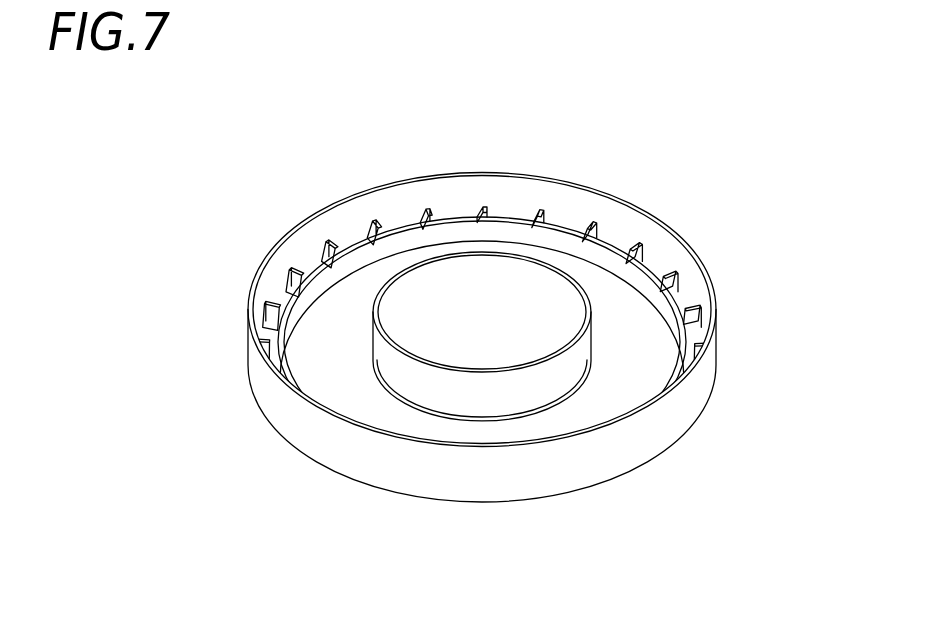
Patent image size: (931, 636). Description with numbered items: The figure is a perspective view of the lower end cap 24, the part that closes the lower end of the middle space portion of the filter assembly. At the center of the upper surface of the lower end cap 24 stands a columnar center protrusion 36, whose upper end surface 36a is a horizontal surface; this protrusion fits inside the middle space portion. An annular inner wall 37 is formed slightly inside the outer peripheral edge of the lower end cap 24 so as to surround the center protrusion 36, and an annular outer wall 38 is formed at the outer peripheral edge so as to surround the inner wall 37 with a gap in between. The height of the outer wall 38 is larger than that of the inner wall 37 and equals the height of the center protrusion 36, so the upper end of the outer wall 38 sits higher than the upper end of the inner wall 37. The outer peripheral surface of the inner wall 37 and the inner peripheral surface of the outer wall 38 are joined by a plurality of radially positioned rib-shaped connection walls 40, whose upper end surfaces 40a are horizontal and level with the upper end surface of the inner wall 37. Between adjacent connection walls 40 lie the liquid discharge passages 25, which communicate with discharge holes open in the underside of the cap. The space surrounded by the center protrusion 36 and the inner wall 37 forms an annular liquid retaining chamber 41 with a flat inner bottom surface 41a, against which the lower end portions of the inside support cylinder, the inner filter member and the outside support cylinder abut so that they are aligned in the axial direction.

The lower end cap 24 is at (635, 167).
The liquid discharge passage 25 is at (452, 215).
The center protrusion 36 is at (482, 336).
The upper end surface of the center protrusion 36a is at (498, 278).
The inner wall 37 is at (398, 248).
The outer wall 38 is at (315, 232).
The connection wall 40 is at (529, 273).
The upper end surface of the connection wall 40a is at (672, 285).
The liquid retaining chamber 41 is at (342, 374).
The inner bottom surface of the liquid retaining chamber 41a is at (360, 400).